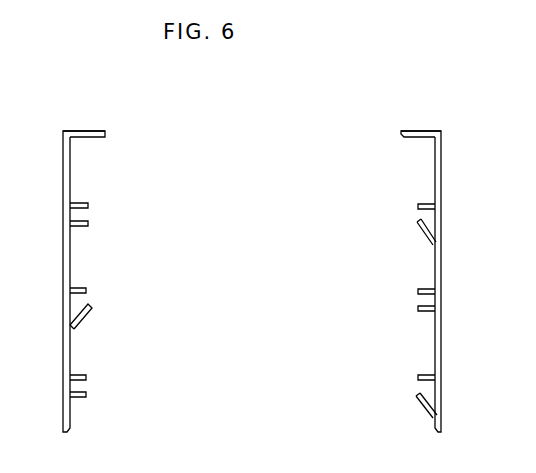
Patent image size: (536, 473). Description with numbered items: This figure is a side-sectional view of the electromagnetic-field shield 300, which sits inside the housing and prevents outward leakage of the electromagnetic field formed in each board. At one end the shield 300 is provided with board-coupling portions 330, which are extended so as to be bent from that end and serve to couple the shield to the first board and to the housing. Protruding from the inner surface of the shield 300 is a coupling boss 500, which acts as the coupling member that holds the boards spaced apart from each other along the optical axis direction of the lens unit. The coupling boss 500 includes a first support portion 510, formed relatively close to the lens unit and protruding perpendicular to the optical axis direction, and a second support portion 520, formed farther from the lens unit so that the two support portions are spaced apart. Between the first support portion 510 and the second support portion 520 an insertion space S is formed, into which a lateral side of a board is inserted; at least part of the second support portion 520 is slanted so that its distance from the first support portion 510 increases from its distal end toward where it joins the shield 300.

The electromagnetic-field shield 300 is at (90, 80).
The board-coupling portion 330 is at (104, 131).
The first support portion 510 is at (88, 205).
The second support portion 520 is at (88, 224).
The coupling boss 500 is at (152, 181).
The insertion space S is at (68, 300).